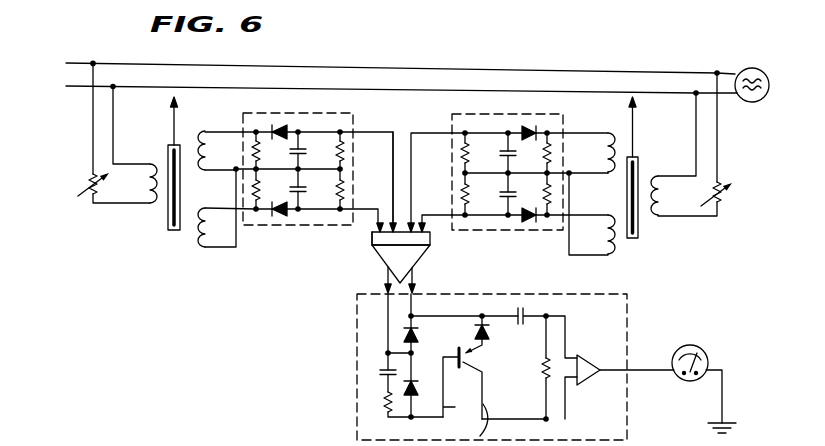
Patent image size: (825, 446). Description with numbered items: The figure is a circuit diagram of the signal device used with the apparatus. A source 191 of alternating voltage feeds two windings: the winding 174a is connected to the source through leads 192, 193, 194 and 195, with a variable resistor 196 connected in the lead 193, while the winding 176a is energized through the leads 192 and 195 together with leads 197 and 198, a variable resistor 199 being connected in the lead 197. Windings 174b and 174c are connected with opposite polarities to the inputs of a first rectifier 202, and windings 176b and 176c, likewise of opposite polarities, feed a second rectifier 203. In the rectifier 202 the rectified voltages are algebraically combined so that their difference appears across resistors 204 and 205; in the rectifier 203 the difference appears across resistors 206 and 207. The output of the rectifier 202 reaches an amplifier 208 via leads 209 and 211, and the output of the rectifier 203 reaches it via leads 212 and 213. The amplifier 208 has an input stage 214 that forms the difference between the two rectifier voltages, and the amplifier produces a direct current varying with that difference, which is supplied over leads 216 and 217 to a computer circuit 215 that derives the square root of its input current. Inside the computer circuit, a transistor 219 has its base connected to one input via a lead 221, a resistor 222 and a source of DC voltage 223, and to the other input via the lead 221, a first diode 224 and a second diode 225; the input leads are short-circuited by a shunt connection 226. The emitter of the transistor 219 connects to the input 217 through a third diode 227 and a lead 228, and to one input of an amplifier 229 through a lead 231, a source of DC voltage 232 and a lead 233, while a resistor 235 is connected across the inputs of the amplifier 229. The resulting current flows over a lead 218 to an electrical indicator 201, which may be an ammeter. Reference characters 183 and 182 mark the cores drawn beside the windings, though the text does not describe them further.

The source of alternating voltage 191 is at (769, 84).
The lead 192 is at (358, 67).
The lead 195 is at (491, 91).
The lead 197 is at (92, 104).
The lead 198 is at (114, 104).
The variable resistor 199 is at (90, 170).
The winding 176a is at (150, 204).
The winding 176b is at (211, 131).
The winding 176c is at (211, 223).
The core 183 is at (172, 231).
The second rectifier 203 is at (288, 113).
The resistor 206 is at (348, 152).
The resistor 207 is at (346, 192).
The lead 212 is at (390, 133).
The lead 213 is at (362, 213).
The lead 209 is at (413, 134).
The lead 211 is at (430, 218).
The first rectifier 202 is at (487, 114).
The resistor 204 is at (462, 149).
The resistor 205 is at (462, 192).
The winding 174a is at (661, 207).
The winding 174b is at (594, 153).
The winding 174c is at (613, 246).
The core 182 is at (638, 237).
The lead 194 is at (695, 122).
The lead 193 is at (719, 125).
The variable resistor 196 is at (715, 197).
The amplifier 208 is at (421, 255).
The input stage 214 is at (371, 242).
The lead 216 is at (387, 278).
The lead 217 is at (415, 279).
The computer circuit 215 is at (357, 306).
The shunt connection 226 is at (393, 351).
The source of DC voltage 223 is at (380, 370).
The resistor 222 is at (382, 402).
The second diode 225 is at (418, 333).
The first diode 224 is at (416, 388).
The lead 228 is at (466, 304).
The lead 231 is at (484, 315).
The source of DC voltage 232 is at (525, 306).
The third diode 227 is at (486, 335).
The transistor 219 is at (462, 357).
The lead 221 is at (494, 420).
The lead 233 is at (565, 341).
The resistor 235 is at (545, 400).
The amplifier 229 is at (586, 383).
The lead 218 is at (645, 371).
The electrical indicator 201 is at (706, 353).